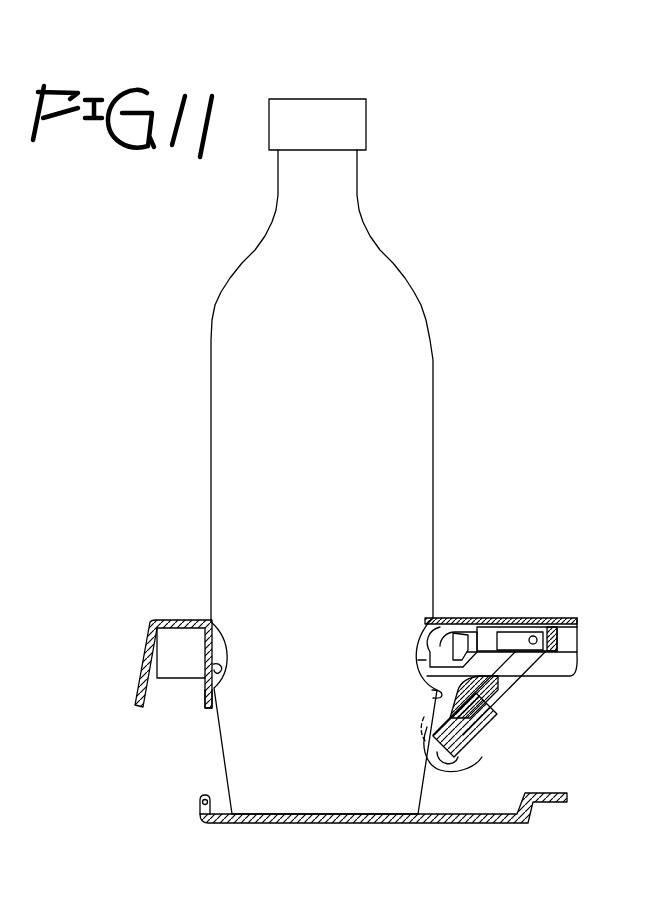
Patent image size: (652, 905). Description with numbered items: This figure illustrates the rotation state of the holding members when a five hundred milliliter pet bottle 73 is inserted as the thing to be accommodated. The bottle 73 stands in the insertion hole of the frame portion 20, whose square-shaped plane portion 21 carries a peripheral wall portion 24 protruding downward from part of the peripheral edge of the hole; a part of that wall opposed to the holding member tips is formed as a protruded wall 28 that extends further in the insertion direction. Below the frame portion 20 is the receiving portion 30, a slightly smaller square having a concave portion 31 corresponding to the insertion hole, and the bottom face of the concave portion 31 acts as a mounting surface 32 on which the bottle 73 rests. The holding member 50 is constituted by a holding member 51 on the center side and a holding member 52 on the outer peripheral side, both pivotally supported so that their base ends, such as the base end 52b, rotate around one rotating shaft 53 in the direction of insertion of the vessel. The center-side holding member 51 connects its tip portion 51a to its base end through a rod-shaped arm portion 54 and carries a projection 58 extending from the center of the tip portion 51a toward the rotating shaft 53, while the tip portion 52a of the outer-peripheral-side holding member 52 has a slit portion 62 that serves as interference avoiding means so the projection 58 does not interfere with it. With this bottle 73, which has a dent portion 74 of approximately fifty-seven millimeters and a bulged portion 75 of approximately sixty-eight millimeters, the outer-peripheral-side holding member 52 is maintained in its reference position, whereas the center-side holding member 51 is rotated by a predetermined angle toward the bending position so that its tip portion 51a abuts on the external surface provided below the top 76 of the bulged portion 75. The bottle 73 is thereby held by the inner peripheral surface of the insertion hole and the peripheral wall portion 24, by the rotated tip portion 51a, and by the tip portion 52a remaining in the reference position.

The frame portion 20 is at (167, 653).
The plane portion 21 is at (188, 618).
The peripheral wall portion 24 is at (210, 650).
The protruded wall 28 is at (207, 697).
The receiving portion 30 is at (389, 803).
The concave portion 31 is at (290, 814).
The mounting surface 32 is at (350, 814).
The holding member 50 is at (480, 528).
The holding member on the center side 51 is at (484, 748).
The tip portion 51a is at (468, 755).
The holding member on the outer peripheral side 52 is at (487, 650).
The tip portion 52a is at (452, 648).
The base end 52b is at (512, 625).
The rotating shaft 53 is at (577, 660).
The arm portion 54 is at (557, 677).
The projection 58 is at (507, 693).
The slit portion 62 is at (476, 617).
The pet bottle 73 is at (436, 381).
The dent portion 74 is at (420, 666).
The bulged portion 75 is at (221, 668).
The top 76 is at (432, 699).